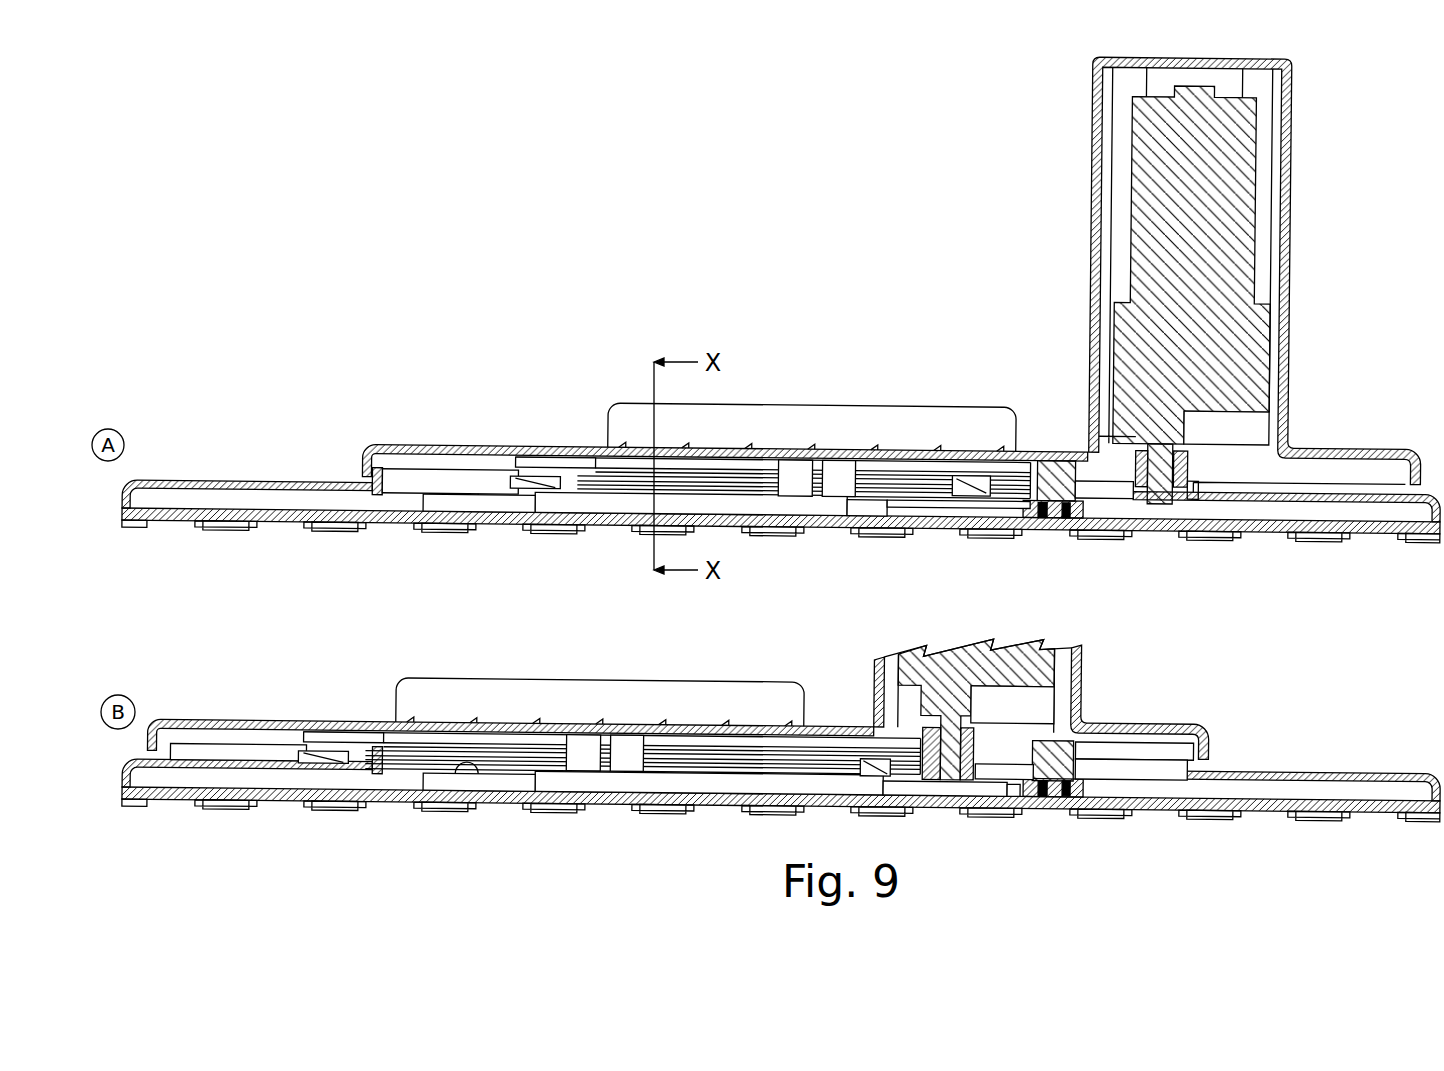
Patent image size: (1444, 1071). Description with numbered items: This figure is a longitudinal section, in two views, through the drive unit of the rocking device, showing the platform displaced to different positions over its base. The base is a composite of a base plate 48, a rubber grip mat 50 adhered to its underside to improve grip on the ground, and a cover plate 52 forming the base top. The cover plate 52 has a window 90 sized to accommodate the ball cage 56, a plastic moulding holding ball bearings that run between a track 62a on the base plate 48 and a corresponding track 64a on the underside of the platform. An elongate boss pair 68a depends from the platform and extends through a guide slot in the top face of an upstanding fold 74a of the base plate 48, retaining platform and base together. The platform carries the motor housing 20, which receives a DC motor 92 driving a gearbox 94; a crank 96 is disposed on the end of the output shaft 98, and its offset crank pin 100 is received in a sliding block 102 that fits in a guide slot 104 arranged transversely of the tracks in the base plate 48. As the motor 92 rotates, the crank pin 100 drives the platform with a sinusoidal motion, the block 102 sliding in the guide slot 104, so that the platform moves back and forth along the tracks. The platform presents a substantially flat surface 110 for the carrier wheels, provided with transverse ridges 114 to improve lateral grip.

The motor housing 20 is at (1288, 90).
The base plate 48 is at (815, 525).
The grip mat 50 is at (207, 532).
The cover plate 52 is at (240, 478).
The ball cage 56 is at (545, 478).
The track 62a is at (478, 492).
The track 64a is at (908, 478).
The elongate boss pair 68a is at (842, 470).
The upstanding fold 74a is at (758, 500).
The window 90 is at (440, 470).
The DC motor 92 is at (1222, 162).
The gearbox 94 is at (1267, 357).
The crank 96 is at (1118, 500).
The output shaft 98 is at (1175, 462).
The crank pin 100 is at (1045, 520).
The sliding block 102 is at (1040, 458).
The guide slot 104 is at (1052, 458).
The flat surface 110 is at (583, 440).
The ridges 114 is at (752, 462).